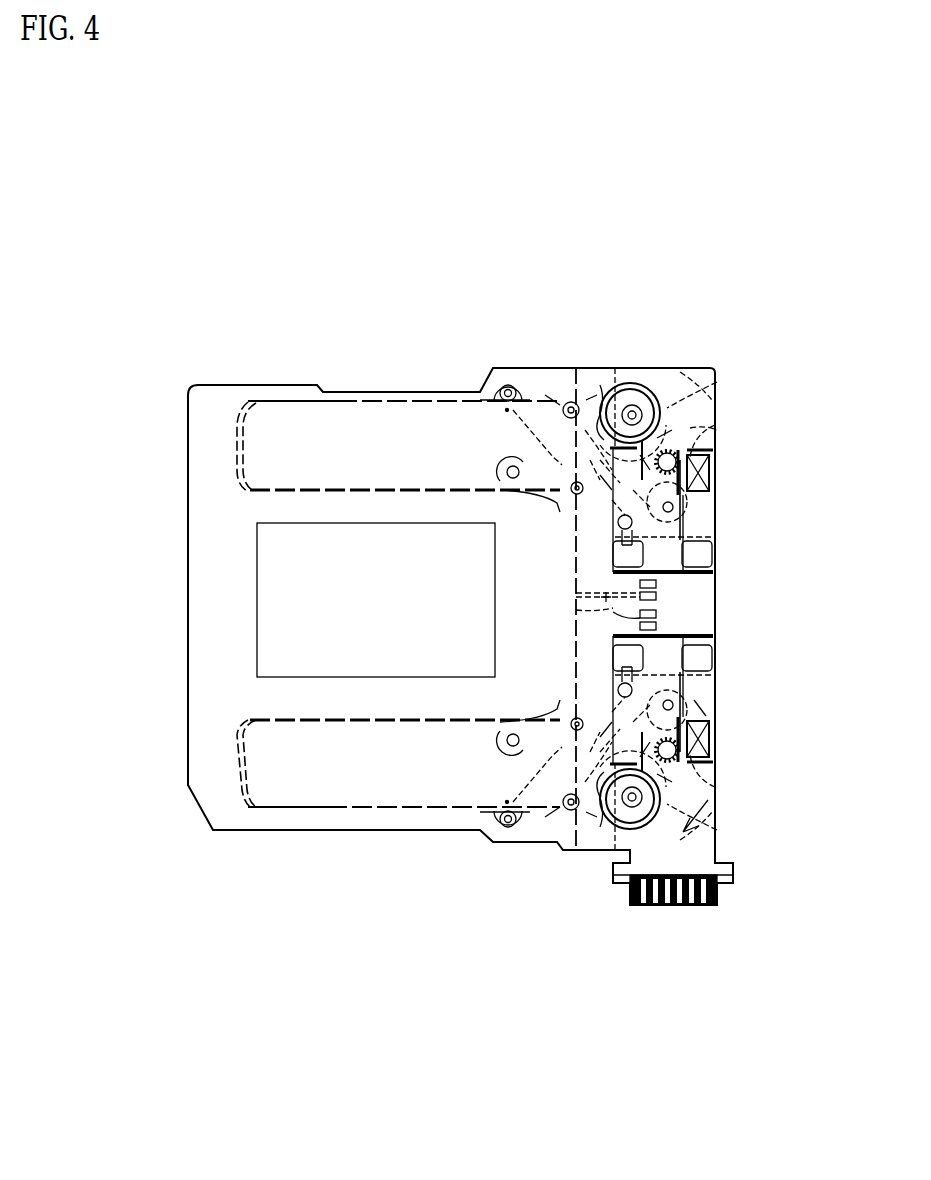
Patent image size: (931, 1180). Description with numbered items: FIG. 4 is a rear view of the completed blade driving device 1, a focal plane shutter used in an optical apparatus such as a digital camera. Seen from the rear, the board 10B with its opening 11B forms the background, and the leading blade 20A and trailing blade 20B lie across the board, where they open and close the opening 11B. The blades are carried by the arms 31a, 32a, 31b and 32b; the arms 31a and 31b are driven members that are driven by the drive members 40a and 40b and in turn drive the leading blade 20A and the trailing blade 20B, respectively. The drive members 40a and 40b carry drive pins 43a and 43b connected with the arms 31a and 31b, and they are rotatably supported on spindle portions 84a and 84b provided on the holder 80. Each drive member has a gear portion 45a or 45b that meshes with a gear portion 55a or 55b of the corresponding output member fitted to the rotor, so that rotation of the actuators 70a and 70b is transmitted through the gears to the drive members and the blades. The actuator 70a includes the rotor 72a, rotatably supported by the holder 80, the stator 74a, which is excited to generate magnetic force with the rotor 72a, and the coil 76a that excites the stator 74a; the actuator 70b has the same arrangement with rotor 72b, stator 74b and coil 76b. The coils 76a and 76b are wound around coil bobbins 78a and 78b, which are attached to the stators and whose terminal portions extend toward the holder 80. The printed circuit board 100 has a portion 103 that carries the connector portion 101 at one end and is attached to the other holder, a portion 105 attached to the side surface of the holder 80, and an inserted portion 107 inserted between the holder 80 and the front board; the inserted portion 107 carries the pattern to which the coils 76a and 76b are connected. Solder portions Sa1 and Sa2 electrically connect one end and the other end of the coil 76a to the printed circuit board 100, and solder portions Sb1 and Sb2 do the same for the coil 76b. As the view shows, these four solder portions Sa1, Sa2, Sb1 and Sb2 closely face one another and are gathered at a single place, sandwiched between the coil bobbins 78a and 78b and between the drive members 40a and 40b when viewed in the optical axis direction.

The blade driving device 1 is at (688, 262).
The board 10B is at (183, 557).
The opening 11B is at (335, 523).
The leading blade 20A is at (338, 398).
The trailing blade 20B is at (327, 830).
The arm 31a is at (540, 386).
The arm 31b is at (506, 828).
The arm 32a is at (565, 402).
The arm 32b is at (560, 812).
The drive member 40a is at (700, 508).
The drive member 40b is at (705, 730).
The drive pin 43a is at (722, 382).
The drive pin 43b is at (712, 800).
The gear portion 45a is at (710, 475).
The gear portion 45b is at (710, 745).
The gear portion 55a is at (705, 432).
The gear portion 55b is at (720, 790).
The actuator 70a is at (686, 378).
The actuator 70b is at (725, 880).
The rotor 72a is at (630, 383).
The rotor 72b is at (612, 829).
The stator 74a is at (606, 388).
The stator 74b is at (684, 830).
The coil 76a is at (712, 558).
The coil 76b is at (715, 668).
The coil bobbin 78a is at (706, 458).
The coil bobbin 78b is at (708, 758).
The holder 80 is at (560, 593).
The spindle portion 84a is at (710, 528).
The spindle portion 84b is at (700, 722).
The printed circuit board 100 is at (715, 906).
The connector portion 101 is at (637, 907).
The portion 103 is at (638, 862).
The portion 105 is at (706, 716).
The inserted portion 107 is at (613, 622).
The solder portion Sa1 is at (705, 588).
The solder portion Sa2 is at (700, 600).
The solder portion Sb1 is at (705, 640).
The solder portion Sb2 is at (705, 620).